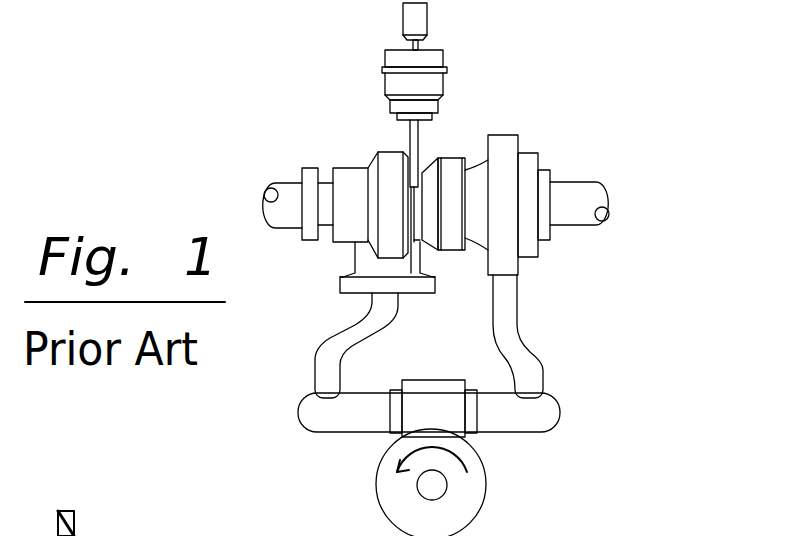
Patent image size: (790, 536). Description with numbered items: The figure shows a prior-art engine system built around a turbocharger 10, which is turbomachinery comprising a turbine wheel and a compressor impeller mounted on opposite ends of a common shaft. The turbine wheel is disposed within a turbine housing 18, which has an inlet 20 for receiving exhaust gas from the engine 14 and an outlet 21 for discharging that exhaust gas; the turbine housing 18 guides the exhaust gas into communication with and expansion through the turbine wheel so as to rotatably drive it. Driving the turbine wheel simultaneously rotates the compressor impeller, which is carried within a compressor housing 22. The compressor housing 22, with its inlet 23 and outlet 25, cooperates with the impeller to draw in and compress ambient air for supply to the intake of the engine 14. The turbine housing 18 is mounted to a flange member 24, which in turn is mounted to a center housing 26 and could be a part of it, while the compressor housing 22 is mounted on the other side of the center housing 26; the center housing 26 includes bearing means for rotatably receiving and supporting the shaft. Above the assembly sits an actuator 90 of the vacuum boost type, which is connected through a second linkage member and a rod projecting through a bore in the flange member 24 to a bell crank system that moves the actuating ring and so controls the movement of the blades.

The turbocharger 10 is at (566, 80).
The engine 14 is at (486, 477).
The turbine housing 18 is at (372, 160).
The inlet 20 is at (315, 358).
The outlet 21 is at (293, 184).
The compressor housing 22 is at (520, 140).
The inlet 23 is at (592, 190).
The flange member 24 is at (420, 167).
The outlet 25 is at (539, 349).
The center housing 26 is at (482, 240).
The actuator 90 is at (393, 62).